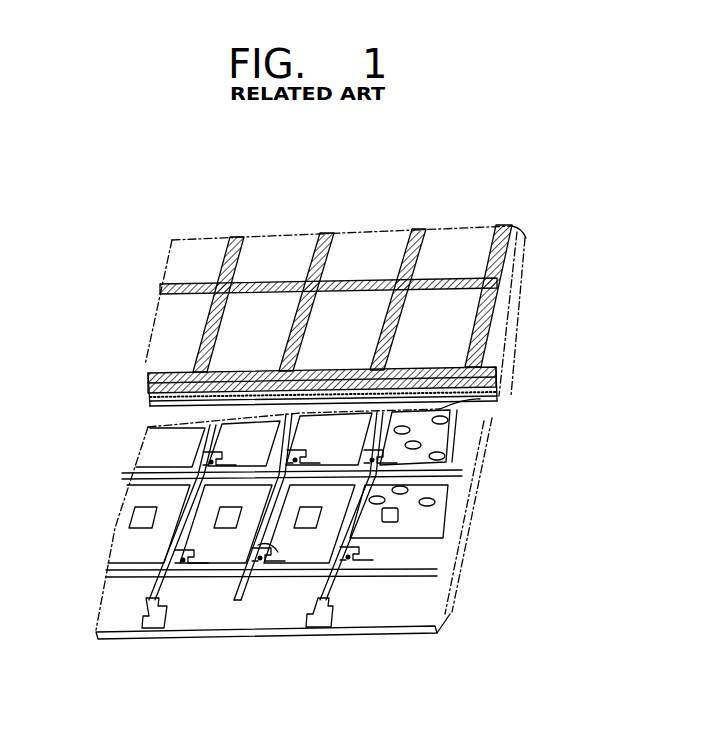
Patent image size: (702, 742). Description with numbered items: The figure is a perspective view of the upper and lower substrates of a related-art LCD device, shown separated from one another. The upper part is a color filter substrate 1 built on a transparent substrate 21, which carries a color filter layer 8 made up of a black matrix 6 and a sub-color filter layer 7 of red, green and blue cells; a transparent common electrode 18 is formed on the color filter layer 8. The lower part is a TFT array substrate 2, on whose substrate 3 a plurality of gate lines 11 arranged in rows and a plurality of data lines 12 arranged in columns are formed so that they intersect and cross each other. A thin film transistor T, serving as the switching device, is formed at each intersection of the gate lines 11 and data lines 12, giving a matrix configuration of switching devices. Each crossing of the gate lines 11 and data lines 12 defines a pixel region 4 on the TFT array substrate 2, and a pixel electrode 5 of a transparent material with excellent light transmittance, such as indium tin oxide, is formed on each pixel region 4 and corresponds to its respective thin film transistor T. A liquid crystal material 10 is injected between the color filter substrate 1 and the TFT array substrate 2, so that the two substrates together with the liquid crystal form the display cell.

The color filter substrate 1 is at (142, 302).
The TFT array substrate 2 is at (98, 517).
The substrate 3 is at (375, 632).
The pixel region 4 is at (340, 578).
The pixel electrode 5 is at (296, 560).
The black matrix 6 is at (417, 230).
The sub-color filter layer 7 is at (152, 345).
The color filter layer 8 is at (413, 212).
The liquid crystal material 10 is at (425, 450).
The gate lines 11 is at (418, 577).
The data lines 12 is at (143, 630).
The transparent common electrode 18 is at (480, 399).
The transparent substrate 21 is at (522, 236).
The thin film transistor T is at (258, 598).